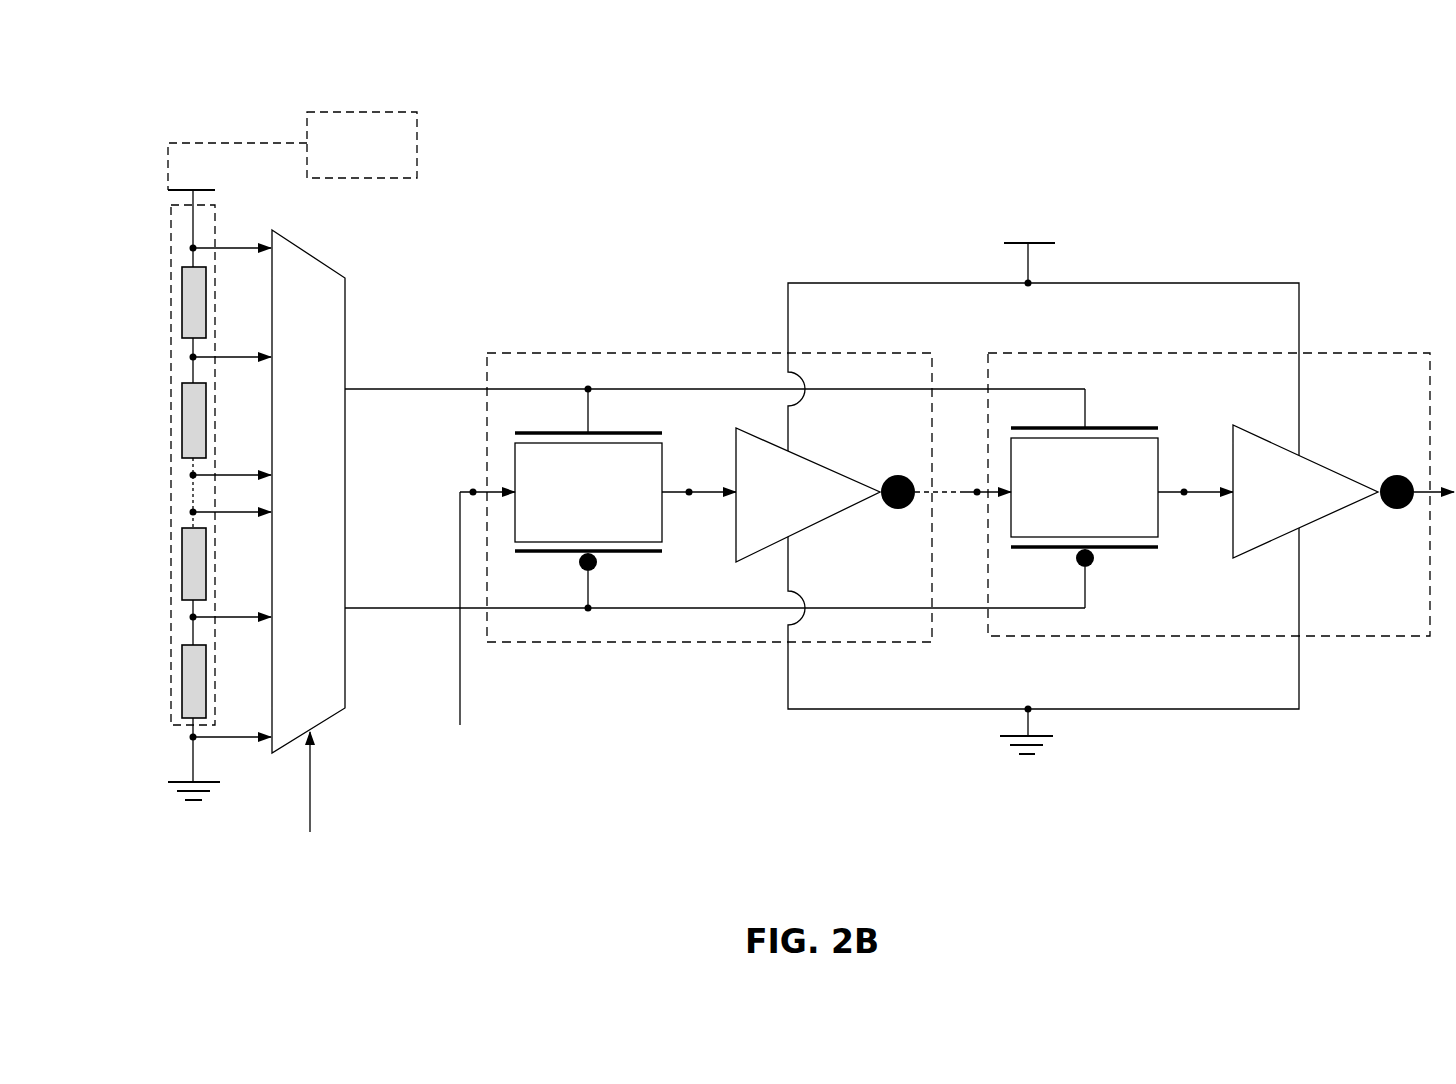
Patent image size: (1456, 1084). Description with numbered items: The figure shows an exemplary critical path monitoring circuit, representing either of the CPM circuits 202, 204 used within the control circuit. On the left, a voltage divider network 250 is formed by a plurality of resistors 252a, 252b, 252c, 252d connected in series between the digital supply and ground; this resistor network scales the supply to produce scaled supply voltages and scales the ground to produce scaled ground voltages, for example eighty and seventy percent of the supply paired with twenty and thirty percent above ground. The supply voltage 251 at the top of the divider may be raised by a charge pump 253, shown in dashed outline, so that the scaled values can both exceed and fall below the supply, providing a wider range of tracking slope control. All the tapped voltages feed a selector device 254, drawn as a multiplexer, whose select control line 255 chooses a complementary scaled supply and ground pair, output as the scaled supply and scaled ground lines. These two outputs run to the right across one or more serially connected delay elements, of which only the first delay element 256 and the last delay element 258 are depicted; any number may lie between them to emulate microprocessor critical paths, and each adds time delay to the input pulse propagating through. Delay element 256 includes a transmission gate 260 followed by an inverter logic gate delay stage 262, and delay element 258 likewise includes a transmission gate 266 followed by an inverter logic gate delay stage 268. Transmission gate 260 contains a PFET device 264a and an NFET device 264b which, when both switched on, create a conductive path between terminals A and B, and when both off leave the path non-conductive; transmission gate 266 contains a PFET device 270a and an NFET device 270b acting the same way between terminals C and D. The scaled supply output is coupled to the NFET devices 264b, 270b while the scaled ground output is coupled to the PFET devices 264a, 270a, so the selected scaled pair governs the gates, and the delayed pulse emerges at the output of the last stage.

The critical path monitoring circuit 202 is at (780, 504).
The critical path monitoring circuit 204 is at (157, 117).
The voltage divider network 250 is at (166, 225).
The VDD voltage 251 is at (196, 187).
The resistor 252a is at (190, 297).
The resistor 252b is at (190, 407).
The resistor 252c is at (184, 582).
The resistor 252d is at (190, 695).
The charge pump 253 is at (418, 147).
The selector device 254 is at (310, 282).
The select control line 255 is at (452, 855).
The delay element 256 is at (616, 650).
The delay element 258 is at (1139, 642).
The transmission gate 260 is at (667, 463).
The inverter logic gate delay stage 262 is at (808, 478).
The PFET device 264a is at (568, 542).
The NFET device 264b is at (613, 445).
The transmission gate 266 is at (1163, 453).
The inverter logic gate delay stage 268 is at (1322, 457).
The PFET device 270a is at (1068, 537).
The NFET device 270b is at (1112, 440).